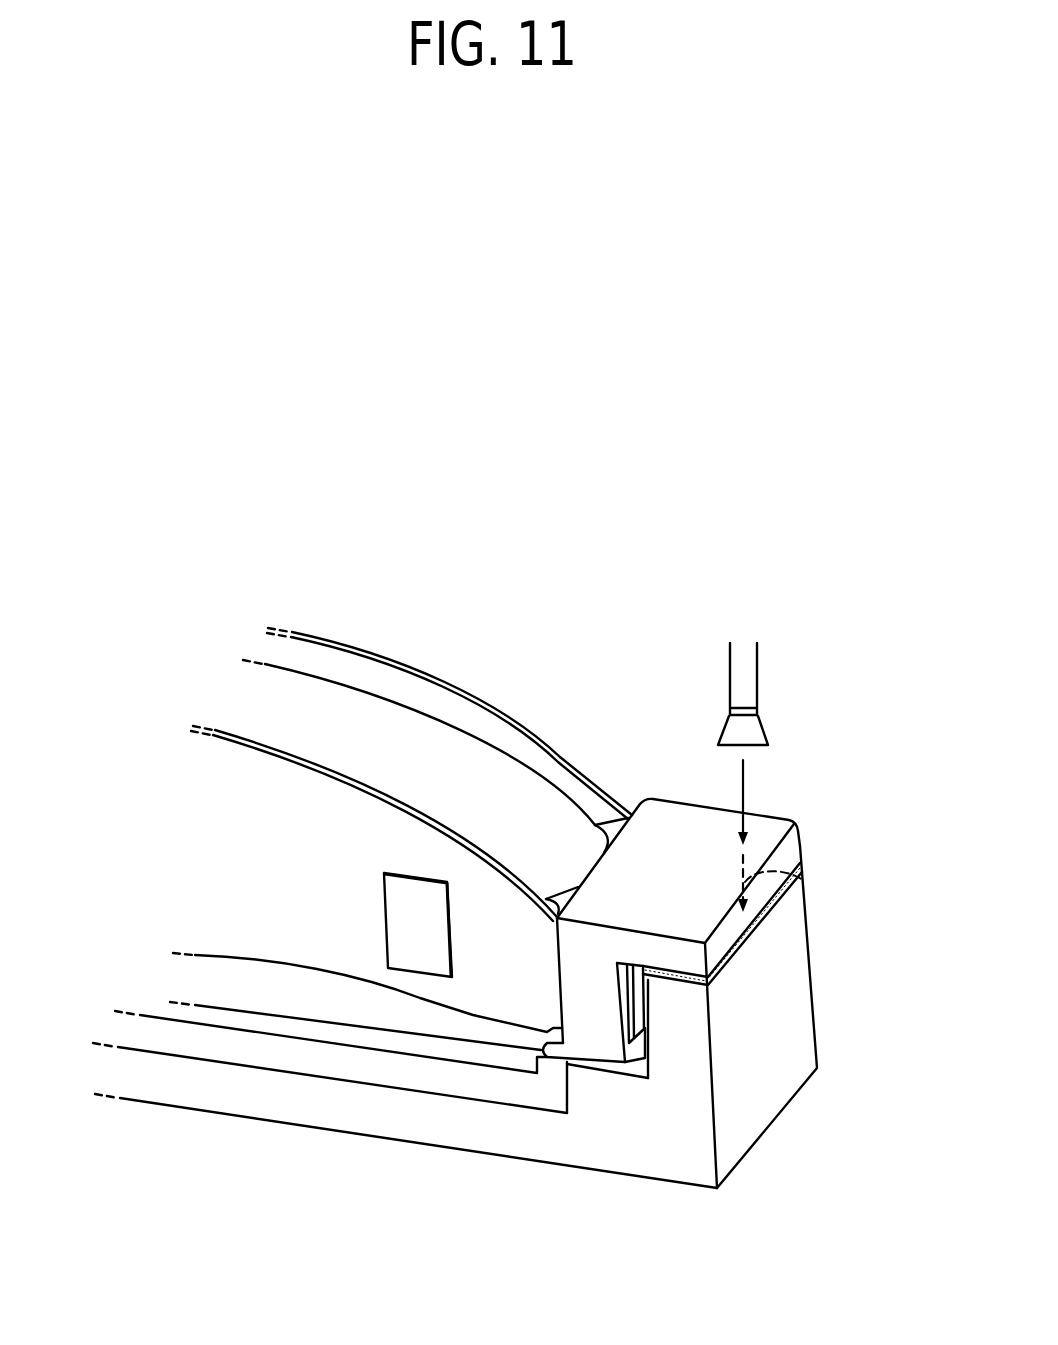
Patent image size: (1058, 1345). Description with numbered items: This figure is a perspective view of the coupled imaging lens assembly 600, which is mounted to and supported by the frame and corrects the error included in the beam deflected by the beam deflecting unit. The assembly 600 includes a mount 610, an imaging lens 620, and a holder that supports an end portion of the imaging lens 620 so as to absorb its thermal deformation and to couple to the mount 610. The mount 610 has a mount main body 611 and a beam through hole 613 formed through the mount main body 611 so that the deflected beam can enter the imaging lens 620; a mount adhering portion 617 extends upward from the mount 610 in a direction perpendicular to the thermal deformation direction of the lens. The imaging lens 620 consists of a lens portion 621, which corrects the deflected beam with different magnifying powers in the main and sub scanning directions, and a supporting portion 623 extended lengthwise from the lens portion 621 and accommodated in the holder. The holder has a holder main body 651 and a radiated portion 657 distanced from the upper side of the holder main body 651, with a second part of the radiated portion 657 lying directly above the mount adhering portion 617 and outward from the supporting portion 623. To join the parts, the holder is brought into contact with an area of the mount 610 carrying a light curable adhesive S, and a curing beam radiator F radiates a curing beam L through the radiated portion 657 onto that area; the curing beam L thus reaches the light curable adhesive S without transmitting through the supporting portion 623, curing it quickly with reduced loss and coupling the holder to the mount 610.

The imaging lens assembly 600 is at (692, 473).
The mount 610 is at (400, 1165).
The mount main body 611 is at (312, 1105).
The beam through hole 613 is at (231, 1014).
The mount adhering portion 617 is at (815, 1003).
The imaging lens 620 is at (486, 656).
The lens portion 621 is at (292, 798).
The supporting portion 623 is at (637, 1000).
The holder main body 651 is at (598, 1033).
The radiated portion 657 is at (727, 888).
The curing beam radiator F is at (750, 688).
The curing beam L is at (745, 783).
The light curable adhesive S is at (744, 930).